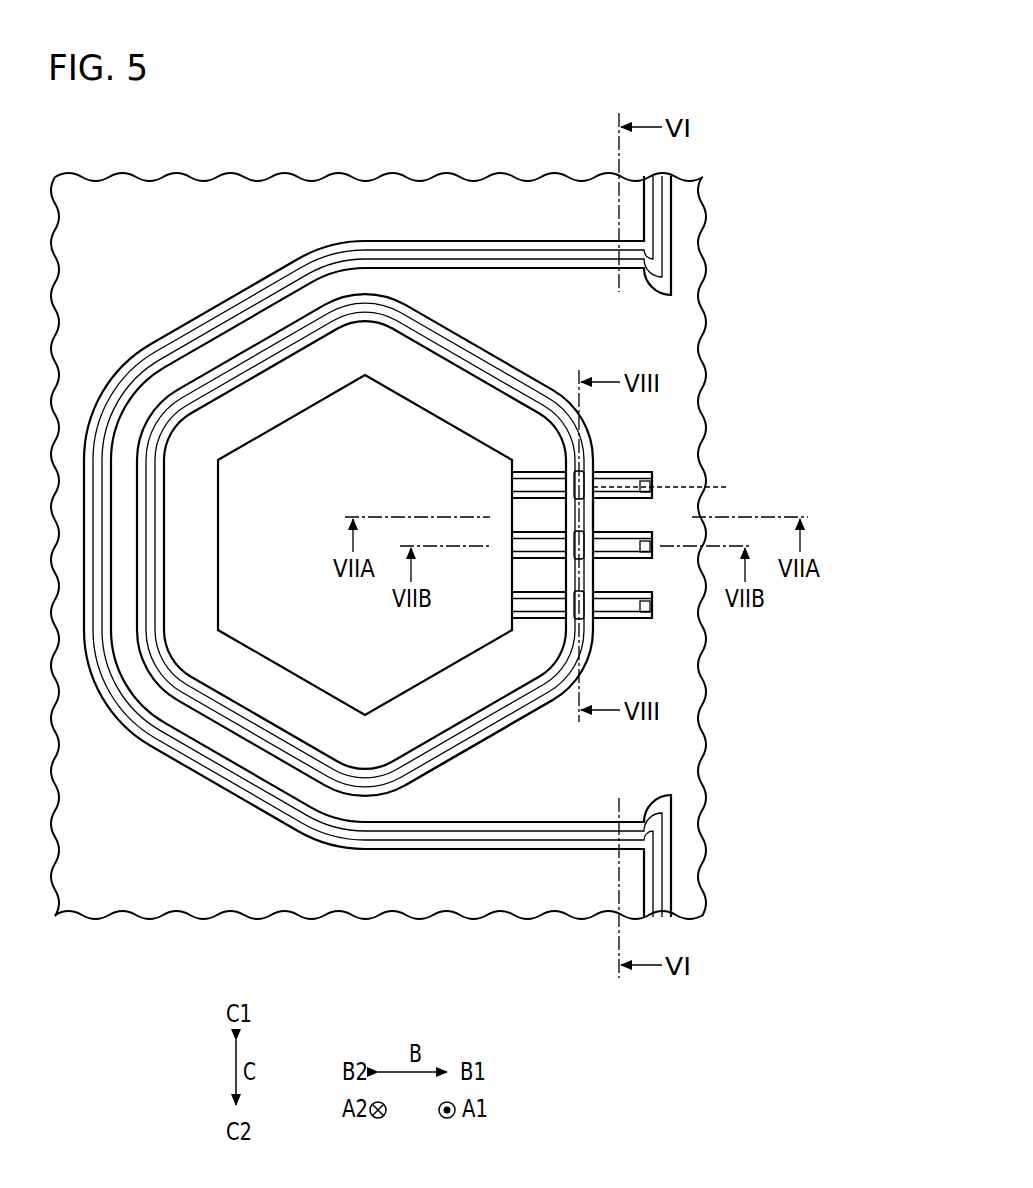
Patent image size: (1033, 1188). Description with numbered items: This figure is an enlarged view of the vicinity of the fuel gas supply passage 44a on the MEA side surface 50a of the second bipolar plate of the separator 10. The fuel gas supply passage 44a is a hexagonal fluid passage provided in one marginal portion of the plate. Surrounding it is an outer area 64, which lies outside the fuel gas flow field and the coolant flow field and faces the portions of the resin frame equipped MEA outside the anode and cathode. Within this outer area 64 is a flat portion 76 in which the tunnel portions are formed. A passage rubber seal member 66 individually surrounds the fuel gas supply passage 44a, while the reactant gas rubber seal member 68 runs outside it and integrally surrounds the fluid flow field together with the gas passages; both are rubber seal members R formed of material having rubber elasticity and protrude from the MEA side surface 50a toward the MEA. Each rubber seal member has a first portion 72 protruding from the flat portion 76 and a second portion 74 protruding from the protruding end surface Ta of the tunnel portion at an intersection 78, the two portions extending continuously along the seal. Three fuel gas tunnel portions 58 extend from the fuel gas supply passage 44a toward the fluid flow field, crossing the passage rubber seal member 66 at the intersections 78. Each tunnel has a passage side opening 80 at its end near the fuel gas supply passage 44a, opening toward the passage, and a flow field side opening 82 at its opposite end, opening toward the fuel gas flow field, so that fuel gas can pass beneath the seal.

The separator 10 is at (742, 80).
The MEA side surface 50a is at (355, 905).
The fuel gas supply passage 44a is at (300, 650).
The outer area 64 is at (360, 218).
The passage rubber seal member 66 is at (462, 356).
The reactant gas rubber seal member 68 is at (288, 290).
The first portion 72 is at (520, 715).
The second portion 74 is at (587, 604).
The flat portion 76 is at (520, 795).
The intersection 78 is at (588, 531).
The passage side opening 80 is at (511, 486).
The flow field side opening 82 is at (644, 479).
The fuel gas tunnel portion 58 is at (656, 472).